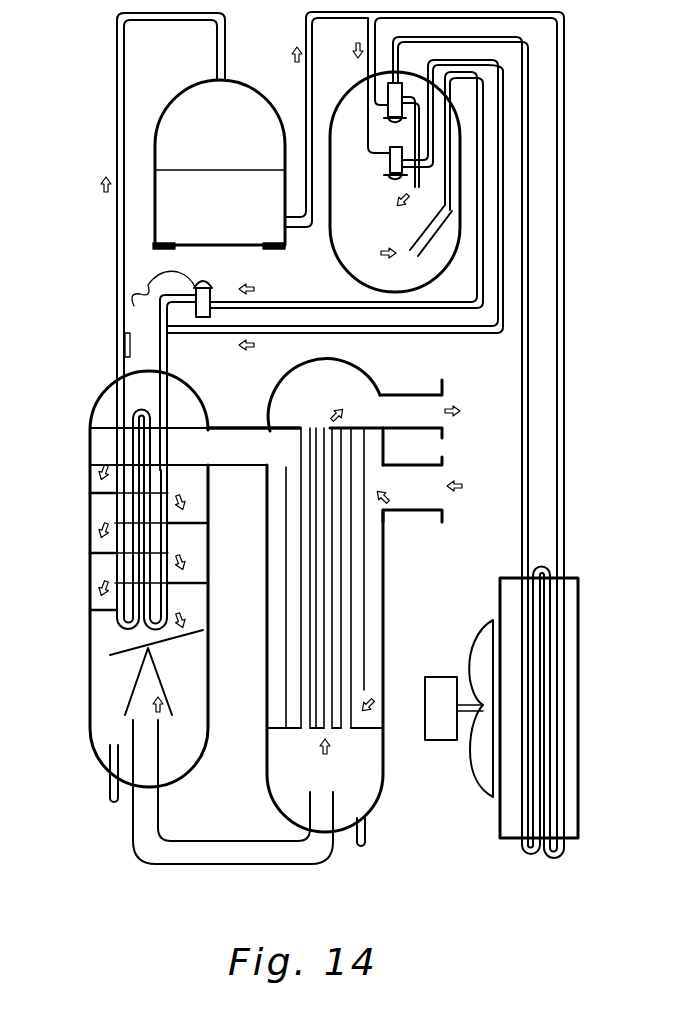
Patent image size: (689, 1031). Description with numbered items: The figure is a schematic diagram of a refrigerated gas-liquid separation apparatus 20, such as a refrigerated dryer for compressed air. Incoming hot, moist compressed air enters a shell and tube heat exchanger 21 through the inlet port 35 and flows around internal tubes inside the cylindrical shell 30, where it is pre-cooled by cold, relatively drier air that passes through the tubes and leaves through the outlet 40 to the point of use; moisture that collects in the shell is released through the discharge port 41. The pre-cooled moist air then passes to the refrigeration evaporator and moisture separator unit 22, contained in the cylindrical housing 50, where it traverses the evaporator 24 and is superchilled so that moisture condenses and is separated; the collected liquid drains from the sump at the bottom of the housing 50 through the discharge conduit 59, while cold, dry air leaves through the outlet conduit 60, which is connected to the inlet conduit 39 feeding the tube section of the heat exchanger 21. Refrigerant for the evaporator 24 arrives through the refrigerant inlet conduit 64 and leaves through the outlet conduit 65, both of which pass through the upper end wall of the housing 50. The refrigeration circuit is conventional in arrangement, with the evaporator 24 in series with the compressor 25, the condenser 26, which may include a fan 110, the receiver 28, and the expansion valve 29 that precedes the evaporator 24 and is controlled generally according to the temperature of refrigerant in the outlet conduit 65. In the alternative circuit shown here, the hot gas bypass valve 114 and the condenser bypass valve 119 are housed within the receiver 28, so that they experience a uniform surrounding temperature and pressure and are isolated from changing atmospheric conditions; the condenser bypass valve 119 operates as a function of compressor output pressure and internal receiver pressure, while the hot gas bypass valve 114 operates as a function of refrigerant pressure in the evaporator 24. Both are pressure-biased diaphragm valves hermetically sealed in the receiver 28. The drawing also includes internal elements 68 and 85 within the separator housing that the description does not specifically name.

The refrigerated gas-liquid separation apparatus 20 is at (466, 876).
The shell and tube heat exchanger 21 is at (394, 590).
The refrigeration evaporator and moisture separator unit 22 is at (86, 487).
The evaporator 24 is at (90, 556).
The compressor 25 is at (268, 52).
The condenser 26 is at (563, 712).
The receiver 28 is at (350, 283).
The expansion valve 29 is at (212, 292).
The cylindrical housing or shell 30 is at (372, 668).
The inlet port 35 is at (430, 483).
The inlet conduit 39 is at (222, 866).
The outlet 40 is at (422, 412).
The discharge port 41 is at (370, 836).
The cylindrical housing 50 is at (90, 745).
The discharge conduit 59 is at (110, 790).
The outlet conduit 60 is at (173, 787).
The refrigerant inlet conduit 64 is at (176, 352).
The outlet conduit 65 is at (115, 263).
The baffle plates 68 is at (182, 586).
The spray nozzle 85 is at (163, 680).
The fan 110 is at (482, 795).
The hot gas bypass valve 114 is at (392, 176).
The condenser bypass valve 119 is at (388, 108).